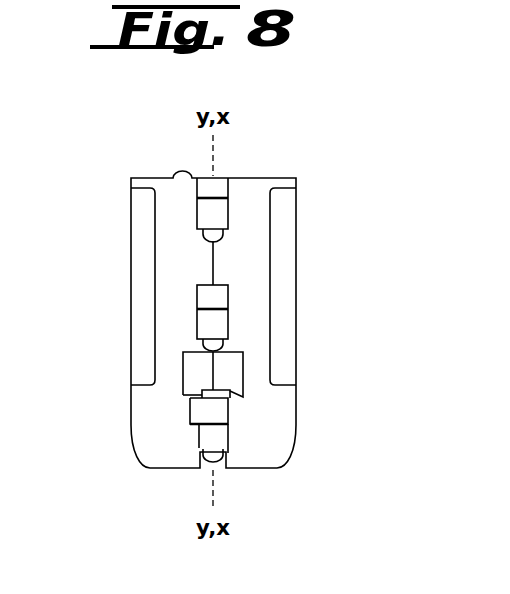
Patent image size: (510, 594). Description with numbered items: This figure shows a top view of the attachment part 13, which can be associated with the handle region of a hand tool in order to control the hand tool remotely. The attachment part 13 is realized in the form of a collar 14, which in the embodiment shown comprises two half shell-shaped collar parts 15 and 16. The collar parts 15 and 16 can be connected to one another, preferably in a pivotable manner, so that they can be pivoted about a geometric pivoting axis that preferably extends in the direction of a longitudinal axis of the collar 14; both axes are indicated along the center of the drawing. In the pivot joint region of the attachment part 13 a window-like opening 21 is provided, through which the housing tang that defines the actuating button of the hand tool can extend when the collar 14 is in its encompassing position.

The attachment part 13 is at (312, 173).
The collar 14 is at (277, 292).
The collar part 15 is at (262, 415).
The collar part 16 is at (173, 307).
The window-like opening 21 is at (192, 388).